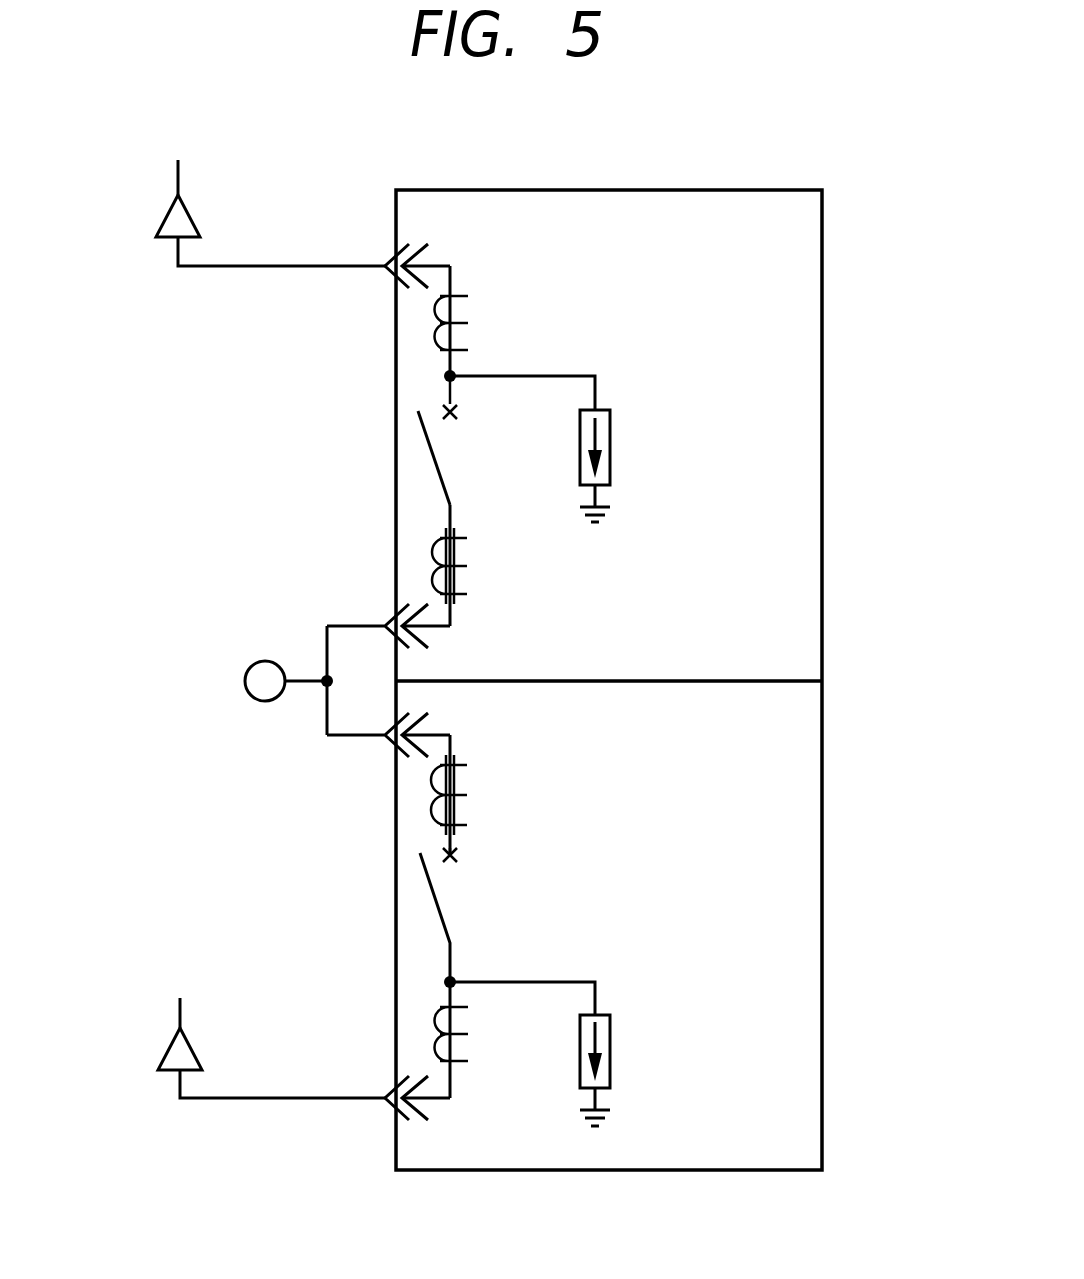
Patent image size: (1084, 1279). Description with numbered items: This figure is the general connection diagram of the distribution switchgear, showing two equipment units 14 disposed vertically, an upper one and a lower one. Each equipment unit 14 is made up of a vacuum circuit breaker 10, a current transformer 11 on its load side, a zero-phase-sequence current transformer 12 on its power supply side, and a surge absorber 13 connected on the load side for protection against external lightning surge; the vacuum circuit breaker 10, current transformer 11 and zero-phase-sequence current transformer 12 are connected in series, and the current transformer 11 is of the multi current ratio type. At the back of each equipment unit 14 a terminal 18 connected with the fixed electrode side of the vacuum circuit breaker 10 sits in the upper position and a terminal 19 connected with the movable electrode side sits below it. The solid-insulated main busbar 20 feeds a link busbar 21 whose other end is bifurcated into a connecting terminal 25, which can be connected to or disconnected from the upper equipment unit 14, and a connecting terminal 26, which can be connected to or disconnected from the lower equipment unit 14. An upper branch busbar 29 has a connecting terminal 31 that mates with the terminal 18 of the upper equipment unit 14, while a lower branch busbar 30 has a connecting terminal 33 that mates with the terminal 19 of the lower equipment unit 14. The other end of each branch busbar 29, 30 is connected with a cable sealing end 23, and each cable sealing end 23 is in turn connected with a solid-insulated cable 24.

The vacuum circuit breaker 10 is at (450, 470).
The current transformer 11 is at (468, 298).
The zero-phase-sequence current transformer 12 is at (476, 586).
The surge absorber 13 is at (612, 418).
The equipment unit 14 is at (806, 253).
The terminal 18 is at (426, 250).
The terminal 19 is at (424, 642).
The main busbar 20 is at (244, 680).
The link busbar 21 is at (326, 716).
The cable sealing end 23 is at (160, 218).
The cable 24 is at (176, 170).
The connecting terminal 25 is at (394, 620).
The connecting terminal 26 is at (388, 752).
The upper branch busbar 29 is at (288, 262).
The lower branch busbar 30 is at (243, 1100).
The connecting terminal 31 is at (383, 280).
The connecting terminal 33 is at (383, 1110).